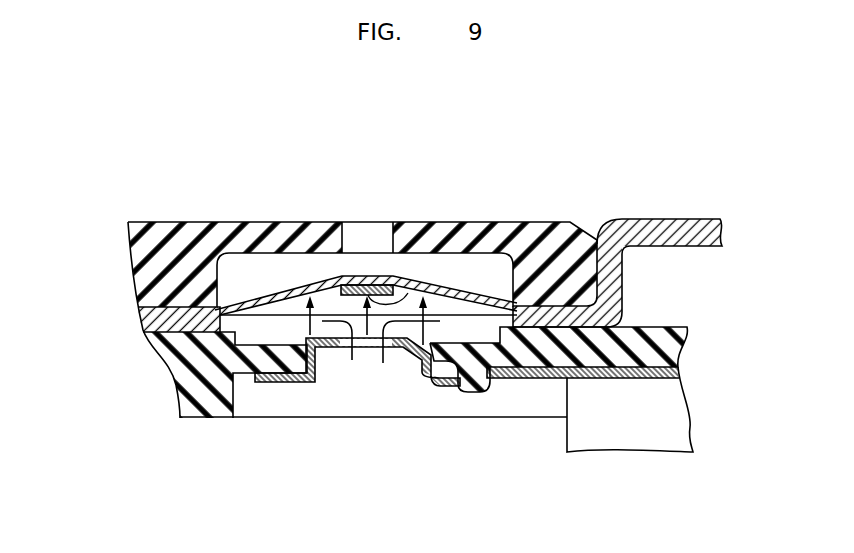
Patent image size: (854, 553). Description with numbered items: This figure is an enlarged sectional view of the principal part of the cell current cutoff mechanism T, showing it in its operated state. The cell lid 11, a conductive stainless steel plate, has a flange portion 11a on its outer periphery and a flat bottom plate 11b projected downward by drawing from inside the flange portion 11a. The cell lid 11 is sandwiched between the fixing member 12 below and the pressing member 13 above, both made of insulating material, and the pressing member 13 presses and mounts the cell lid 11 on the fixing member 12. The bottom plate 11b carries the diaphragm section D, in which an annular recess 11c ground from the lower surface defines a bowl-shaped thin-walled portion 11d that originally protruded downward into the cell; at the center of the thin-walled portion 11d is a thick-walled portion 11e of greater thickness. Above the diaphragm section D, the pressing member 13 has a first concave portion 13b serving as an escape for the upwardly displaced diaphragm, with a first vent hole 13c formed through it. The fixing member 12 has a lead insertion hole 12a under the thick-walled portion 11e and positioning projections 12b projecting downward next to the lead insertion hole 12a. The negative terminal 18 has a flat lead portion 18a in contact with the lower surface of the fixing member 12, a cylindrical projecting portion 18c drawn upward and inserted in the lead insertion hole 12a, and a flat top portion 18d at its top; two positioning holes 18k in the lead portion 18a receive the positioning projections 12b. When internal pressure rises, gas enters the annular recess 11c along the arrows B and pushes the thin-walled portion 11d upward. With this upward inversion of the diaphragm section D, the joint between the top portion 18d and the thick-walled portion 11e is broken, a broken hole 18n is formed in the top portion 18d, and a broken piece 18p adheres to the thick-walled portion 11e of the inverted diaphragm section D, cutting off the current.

The current cutoff mechanism T is at (164, 212).
The diaphragm section D is at (253, 277).
The arrows B is at (368, 344).
The cell lid 11 is at (666, 216).
The flange portion 11a is at (705, 228).
The bottom plate 11b is at (170, 322).
The annular recess 11c is at (235, 453).
The thin-walled portion 11d is at (469, 250).
The thick-walled portion 11e is at (350, 229).
The fixing member 12 is at (672, 320).
The lead insertion hole 12a is at (296, 383).
The positioning projections 12b is at (468, 394).
The pressing member 13 is at (570, 217).
The first concave portion 13b is at (527, 221).
The first vent hole 13c is at (370, 229).
The negative terminal 18 is at (609, 385).
The lead portion 18a is at (265, 383).
The projecting portion 18c is at (318, 352).
The top portion 18d is at (412, 352).
The positioning holes 18k is at (456, 388).
The broken hole 18n is at (377, 350).
The broken piece 18p is at (413, 222).